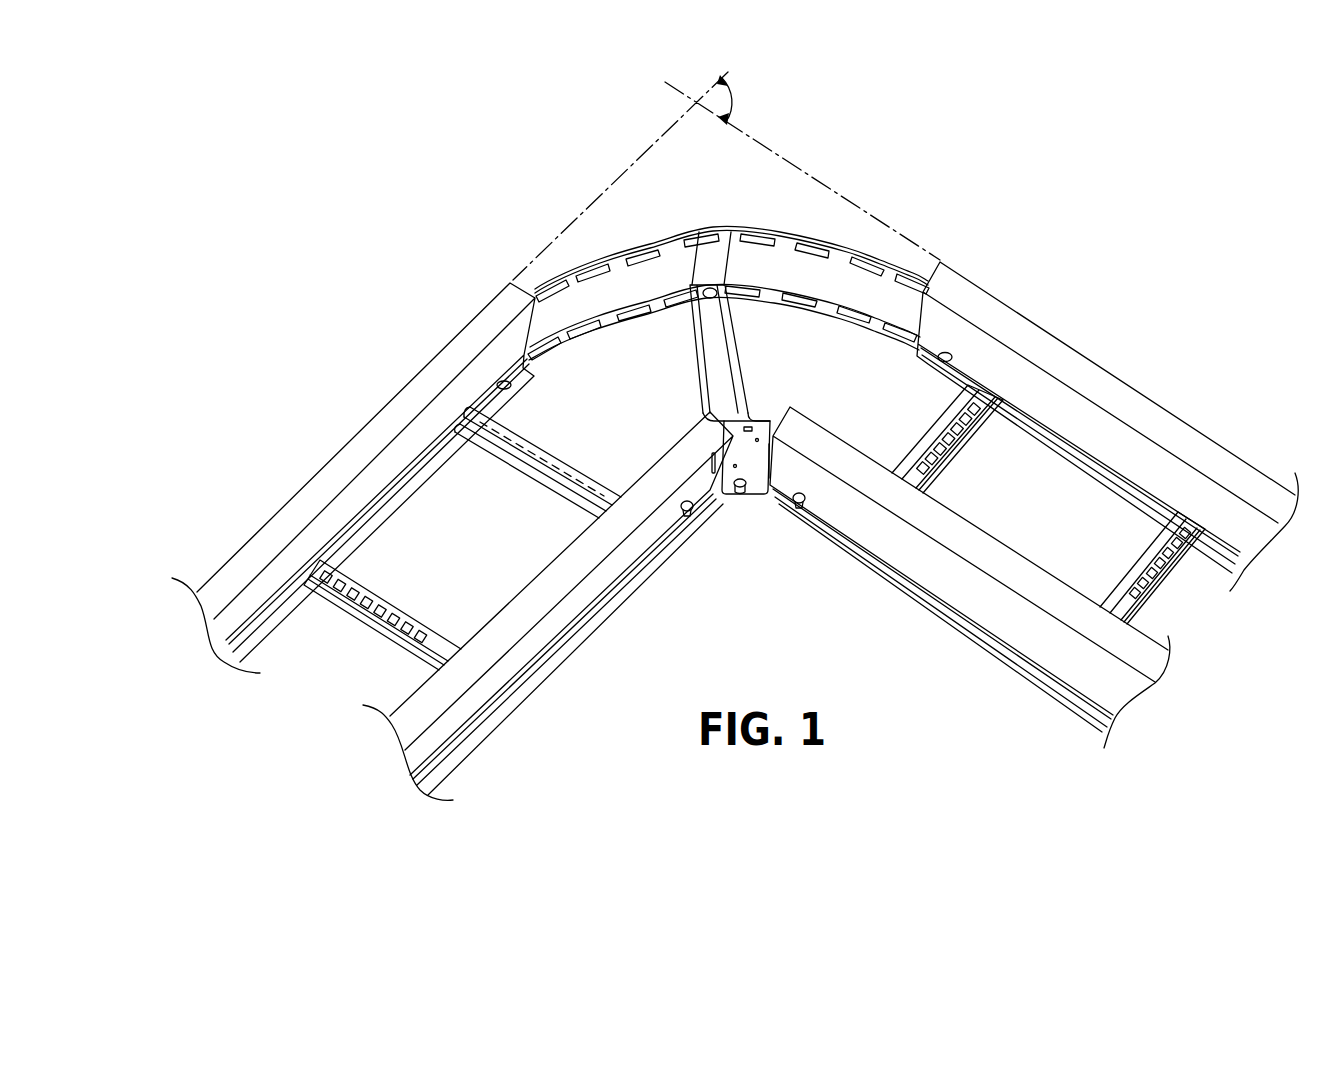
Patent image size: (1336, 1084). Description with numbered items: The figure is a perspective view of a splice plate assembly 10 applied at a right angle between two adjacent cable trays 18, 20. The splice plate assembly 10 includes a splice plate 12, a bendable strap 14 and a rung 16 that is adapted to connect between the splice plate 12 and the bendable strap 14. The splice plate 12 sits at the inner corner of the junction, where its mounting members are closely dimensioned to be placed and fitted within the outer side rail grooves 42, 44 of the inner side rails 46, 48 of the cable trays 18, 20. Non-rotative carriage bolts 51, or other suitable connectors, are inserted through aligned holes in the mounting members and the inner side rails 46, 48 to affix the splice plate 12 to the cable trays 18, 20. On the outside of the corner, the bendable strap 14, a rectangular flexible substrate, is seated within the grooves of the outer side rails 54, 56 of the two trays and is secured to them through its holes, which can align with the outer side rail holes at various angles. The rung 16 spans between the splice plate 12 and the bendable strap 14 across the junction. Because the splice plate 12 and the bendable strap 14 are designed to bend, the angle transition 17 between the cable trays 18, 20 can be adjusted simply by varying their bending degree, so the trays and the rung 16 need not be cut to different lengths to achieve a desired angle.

The splice plate assembly 10 is at (735, 436).
The splice plate 12 is at (745, 507).
The bendable strap 14 is at (660, 276).
The rung 16 is at (720, 360).
The angle transition 17 is at (733, 100).
The cable tray 18 is at (452, 536).
The cable tray 20 is at (1034, 500).
The outer side rail groove 42 is at (580, 598).
The outer side rail groove 44 is at (923, 565).
The inner side rail 46 is at (495, 636).
The inner side rail 48 is at (1027, 582).
The non-rotative carriage bolt 51 is at (688, 514).
The outer side rail 54 is at (445, 362).
The outer side rail 56 is at (1030, 333).